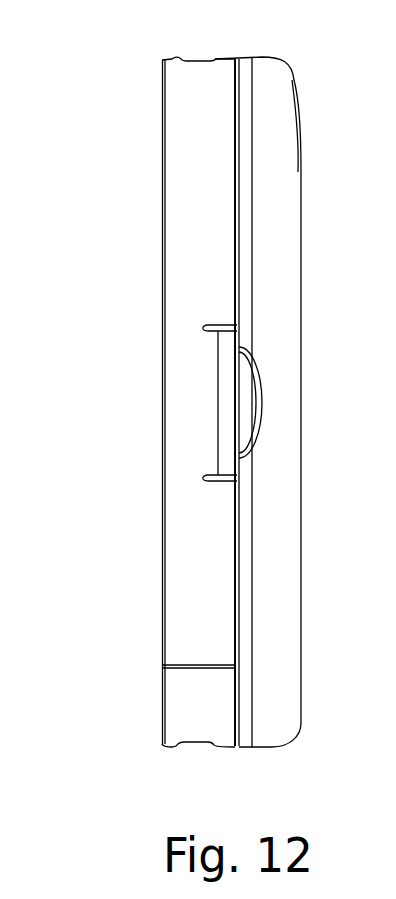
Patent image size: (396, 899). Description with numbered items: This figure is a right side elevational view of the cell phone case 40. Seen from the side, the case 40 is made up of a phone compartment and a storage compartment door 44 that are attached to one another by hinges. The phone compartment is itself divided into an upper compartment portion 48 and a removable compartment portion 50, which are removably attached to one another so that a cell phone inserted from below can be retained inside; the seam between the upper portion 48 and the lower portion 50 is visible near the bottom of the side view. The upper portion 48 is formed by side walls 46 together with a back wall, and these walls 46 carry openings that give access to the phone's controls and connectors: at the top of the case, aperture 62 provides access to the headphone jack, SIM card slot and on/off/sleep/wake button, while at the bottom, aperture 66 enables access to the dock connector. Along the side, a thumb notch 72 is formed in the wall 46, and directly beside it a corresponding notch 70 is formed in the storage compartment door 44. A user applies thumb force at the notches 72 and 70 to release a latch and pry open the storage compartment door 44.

The cell phone case 40 is at (108, 743).
The storage compartment door 44 is at (301, 503).
The side walls 46 is at (220, 267).
The upper compartment portion 48 is at (162, 457).
The removable compartment portion 50 is at (163, 700).
The aperture 62 is at (196, 59).
The aperture 66 is at (193, 748).
The notch 70 is at (261, 376).
The thumb notch 72 is at (218, 423).